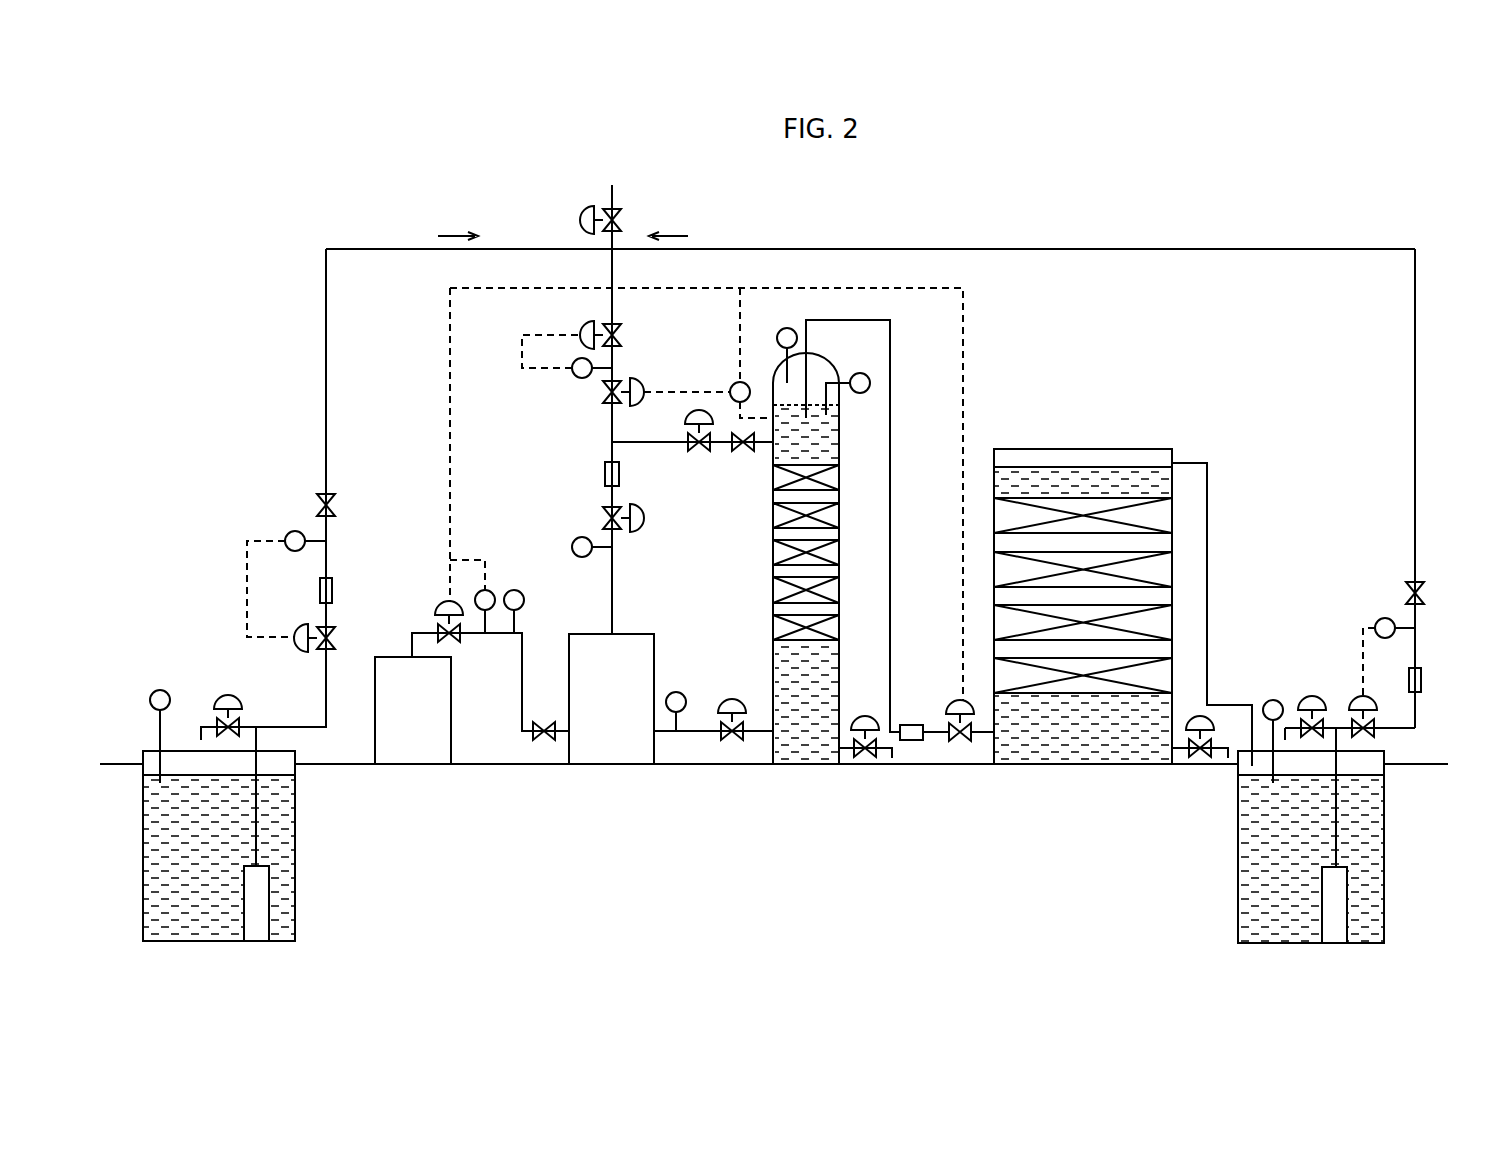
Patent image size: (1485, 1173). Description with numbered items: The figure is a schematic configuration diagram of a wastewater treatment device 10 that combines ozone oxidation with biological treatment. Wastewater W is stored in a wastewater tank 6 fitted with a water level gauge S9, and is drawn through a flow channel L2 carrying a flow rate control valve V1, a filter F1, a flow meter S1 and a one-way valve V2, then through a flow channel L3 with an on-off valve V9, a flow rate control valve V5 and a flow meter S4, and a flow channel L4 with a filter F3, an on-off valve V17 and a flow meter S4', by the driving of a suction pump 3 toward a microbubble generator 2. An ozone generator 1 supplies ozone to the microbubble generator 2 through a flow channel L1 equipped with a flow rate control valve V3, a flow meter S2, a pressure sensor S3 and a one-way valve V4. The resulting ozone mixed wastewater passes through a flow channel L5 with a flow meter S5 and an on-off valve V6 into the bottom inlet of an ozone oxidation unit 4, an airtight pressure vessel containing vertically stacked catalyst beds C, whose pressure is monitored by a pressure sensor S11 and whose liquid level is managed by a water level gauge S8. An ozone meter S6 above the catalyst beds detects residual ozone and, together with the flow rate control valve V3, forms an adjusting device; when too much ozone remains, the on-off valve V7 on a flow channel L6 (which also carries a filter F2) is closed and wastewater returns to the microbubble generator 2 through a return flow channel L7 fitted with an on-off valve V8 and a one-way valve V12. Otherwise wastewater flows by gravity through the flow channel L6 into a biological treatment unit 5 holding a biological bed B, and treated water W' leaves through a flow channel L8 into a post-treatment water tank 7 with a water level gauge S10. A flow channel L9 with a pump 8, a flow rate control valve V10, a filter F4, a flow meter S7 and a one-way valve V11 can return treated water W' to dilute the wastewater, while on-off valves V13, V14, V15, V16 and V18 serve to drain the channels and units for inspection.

The wastewater treatment device 10 is at (876, 246).
The ozone generator 1 is at (460, 703).
The microbubble generator 2 is at (628, 632).
The suction pump 3 is at (269, 900).
The ozone oxidation unit 4 is at (779, 558).
The biological treatment unit 5 is at (1070, 569).
The wastewater tank 6 is at (231, 827).
The post-treatment water tank 7 is at (1307, 847).
The pump 8 is at (1347, 906).
The biological bed B is at (990, 610).
The catalyst bed C is at (770, 558).
The wastewater W is at (249, 858).
The treated water W' is at (1281, 859).
The flow channel L1 is at (414, 633).
The flow channel L2 is at (326, 401).
The flow channel L3 is at (612, 303).
The flow channel L4 is at (612, 452).
The flow channel L5 is at (703, 731).
The flow channel L6 is at (892, 498).
The flow channel L7 is at (664, 442).
The flow channel L8 is at (1208, 518).
The flow channel L9 is at (1415, 440).
The flow rate control valve V1 is at (303, 649).
The one-way valve V2 is at (336, 507).
The flow rate control valve V3 is at (449, 600).
The one-way valve V4 is at (544, 722).
The flow rate control valve V5 is at (622, 334).
The on-off valve V6 is at (730, 699).
The on-off valve V7 is at (958, 698).
The on-off valve V8 is at (699, 452).
The on-off valve V9 is at (603, 394).
The flow rate control valve V10 is at (1360, 695).
The one-way valve V11 is at (1417, 580).
The one-way valve V12 is at (743, 452).
The on-off valve V13 is at (228, 695).
The on-off valve V14 is at (866, 758).
The on-off valve V15 is at (1202, 758).
The on-off valve V16 is at (1308, 695).
The on-off valve V17 is at (640, 521).
The on-off valve V18 is at (580, 220).
The flow meter S1 is at (288, 534).
The flow meter S2 is at (488, 612).
The pressure sensor S3 is at (526, 600).
The flow meter S4 is at (538, 356).
The flow meter S4' is at (580, 514).
The flow meter S5 is at (676, 692).
The ozone meter S6 is at (735, 386).
The flow meter S7 is at (1386, 618).
The water level gauge S8 is at (860, 373).
The water level gauge S9 is at (160, 690).
The water level gauge S10 is at (1266, 702).
The pressure sensor S11 is at (788, 328).
The filter F1 is at (332, 592).
The filter F2 is at (908, 722).
The filter F3 is at (620, 471).
The filter F4 is at (1422, 670).